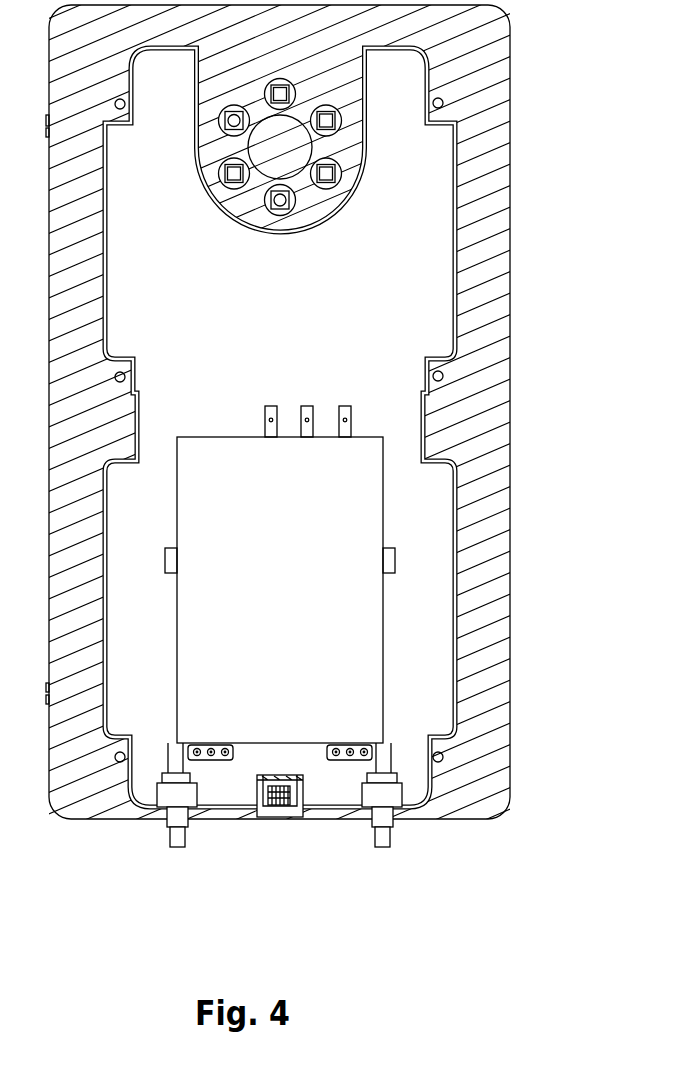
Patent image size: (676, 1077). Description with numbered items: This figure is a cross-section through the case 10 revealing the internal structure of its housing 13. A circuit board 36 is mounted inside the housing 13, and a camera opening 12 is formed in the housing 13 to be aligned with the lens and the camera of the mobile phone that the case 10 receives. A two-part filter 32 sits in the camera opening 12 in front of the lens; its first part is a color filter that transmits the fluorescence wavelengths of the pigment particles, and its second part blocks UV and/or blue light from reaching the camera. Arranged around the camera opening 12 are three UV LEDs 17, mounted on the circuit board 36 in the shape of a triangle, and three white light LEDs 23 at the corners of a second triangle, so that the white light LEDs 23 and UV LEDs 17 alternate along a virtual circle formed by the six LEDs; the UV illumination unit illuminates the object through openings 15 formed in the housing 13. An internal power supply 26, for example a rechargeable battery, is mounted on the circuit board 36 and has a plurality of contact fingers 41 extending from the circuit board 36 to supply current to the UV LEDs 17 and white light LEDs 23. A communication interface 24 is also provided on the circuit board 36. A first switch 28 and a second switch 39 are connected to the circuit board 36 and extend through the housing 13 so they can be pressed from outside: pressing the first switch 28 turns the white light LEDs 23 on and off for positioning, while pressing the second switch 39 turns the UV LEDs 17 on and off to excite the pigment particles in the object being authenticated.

The case 10 is at (510, 635).
The housing 13 is at (483, 397).
The circuit board 36 is at (193, 387).
The two-part filter 32 is at (267, 137).
The camera opening 12 is at (304, 122).
The openings 15 is at (220, 178).
The UV LEDs 17 is at (337, 186).
The white light LEDs 23 is at (280, 204).
The internal power supply 26 is at (232, 725).
The contact fingers 41 is at (308, 406).
The first switch 28 is at (178, 842).
The second switch 39 is at (386, 845).
The communication interface 24 is at (272, 817).